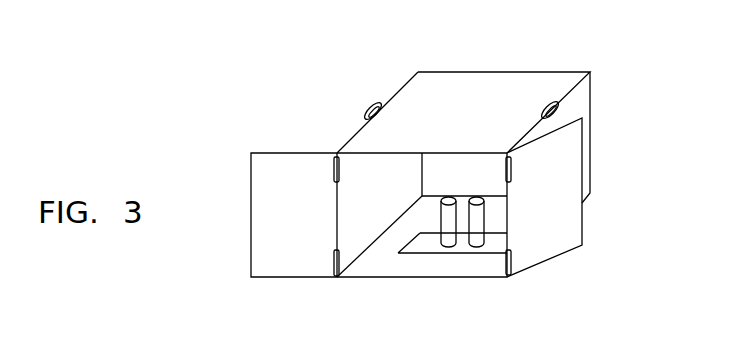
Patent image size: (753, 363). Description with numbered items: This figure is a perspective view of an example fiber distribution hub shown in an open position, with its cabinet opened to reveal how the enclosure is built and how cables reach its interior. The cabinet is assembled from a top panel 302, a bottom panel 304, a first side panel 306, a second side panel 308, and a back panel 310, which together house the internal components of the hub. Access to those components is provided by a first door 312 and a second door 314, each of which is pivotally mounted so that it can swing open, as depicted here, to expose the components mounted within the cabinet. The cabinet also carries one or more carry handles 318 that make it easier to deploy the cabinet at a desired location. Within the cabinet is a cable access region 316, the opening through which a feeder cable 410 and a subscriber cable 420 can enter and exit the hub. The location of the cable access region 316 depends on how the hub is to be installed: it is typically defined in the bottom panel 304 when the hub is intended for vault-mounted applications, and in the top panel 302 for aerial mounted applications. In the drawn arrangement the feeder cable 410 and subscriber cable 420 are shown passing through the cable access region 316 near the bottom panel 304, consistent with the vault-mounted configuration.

The top panel 302 is at (488, 82).
The bottom panel 304 is at (384, 270).
The first side panel 306 is at (573, 110).
The second side panel 308 is at (360, 160).
The back panel 310 is at (476, 183).
The first door 312 is at (315, 231).
The second door 314 is at (562, 222).
The cable access region 316 is at (423, 238).
The carry handle 318 is at (373, 102).
The feeder cable 410 is at (450, 240).
The subscriber cable 420 is at (478, 240).